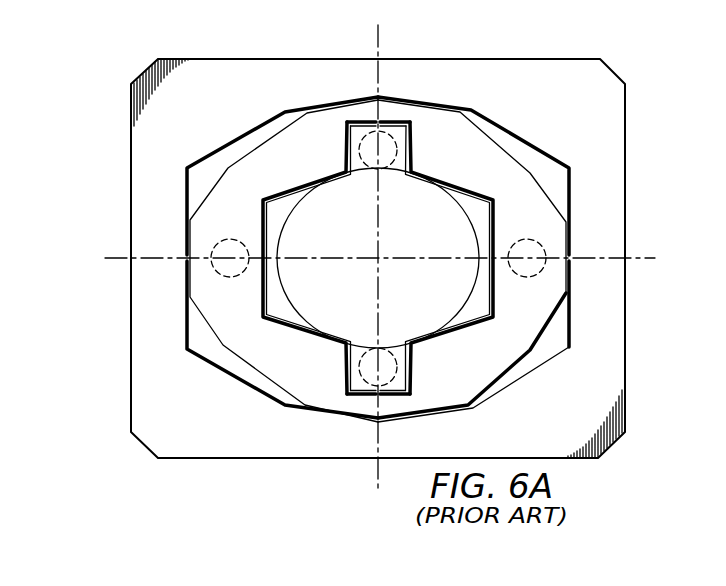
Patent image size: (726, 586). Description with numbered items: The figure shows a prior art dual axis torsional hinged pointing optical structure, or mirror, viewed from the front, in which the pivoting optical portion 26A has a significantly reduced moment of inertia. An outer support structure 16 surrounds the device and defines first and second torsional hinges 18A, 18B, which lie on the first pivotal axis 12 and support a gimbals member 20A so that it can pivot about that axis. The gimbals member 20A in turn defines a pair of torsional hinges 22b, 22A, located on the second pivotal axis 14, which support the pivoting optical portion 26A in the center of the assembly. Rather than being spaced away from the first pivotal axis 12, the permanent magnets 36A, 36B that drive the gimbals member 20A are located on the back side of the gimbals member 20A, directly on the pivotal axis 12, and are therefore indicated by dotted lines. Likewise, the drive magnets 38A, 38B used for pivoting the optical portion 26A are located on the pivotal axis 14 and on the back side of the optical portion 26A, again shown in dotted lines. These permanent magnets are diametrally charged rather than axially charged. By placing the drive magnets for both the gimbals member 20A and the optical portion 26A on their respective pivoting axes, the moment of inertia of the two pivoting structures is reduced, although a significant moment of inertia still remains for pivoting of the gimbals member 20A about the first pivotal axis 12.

The first pivotal axis 12 is at (650, 258).
The pivotal axis 14 is at (380, 33).
The support structure 16 is at (132, 152).
The first torsional hinge 18A is at (182, 262).
The second torsional hinge 18B is at (573, 262).
The gimbals member 20A is at (512, 163).
The torsional hinge 22A is at (374, 400).
The torsional hinge 22b is at (374, 118).
The pivoting optical portion 26A is at (352, 300).
The permanent magnet 36A is at (232, 238).
The permanent magnet 36B is at (527, 278).
The drive magnet 38A is at (355, 372).
The drive magnet 38B is at (398, 148).